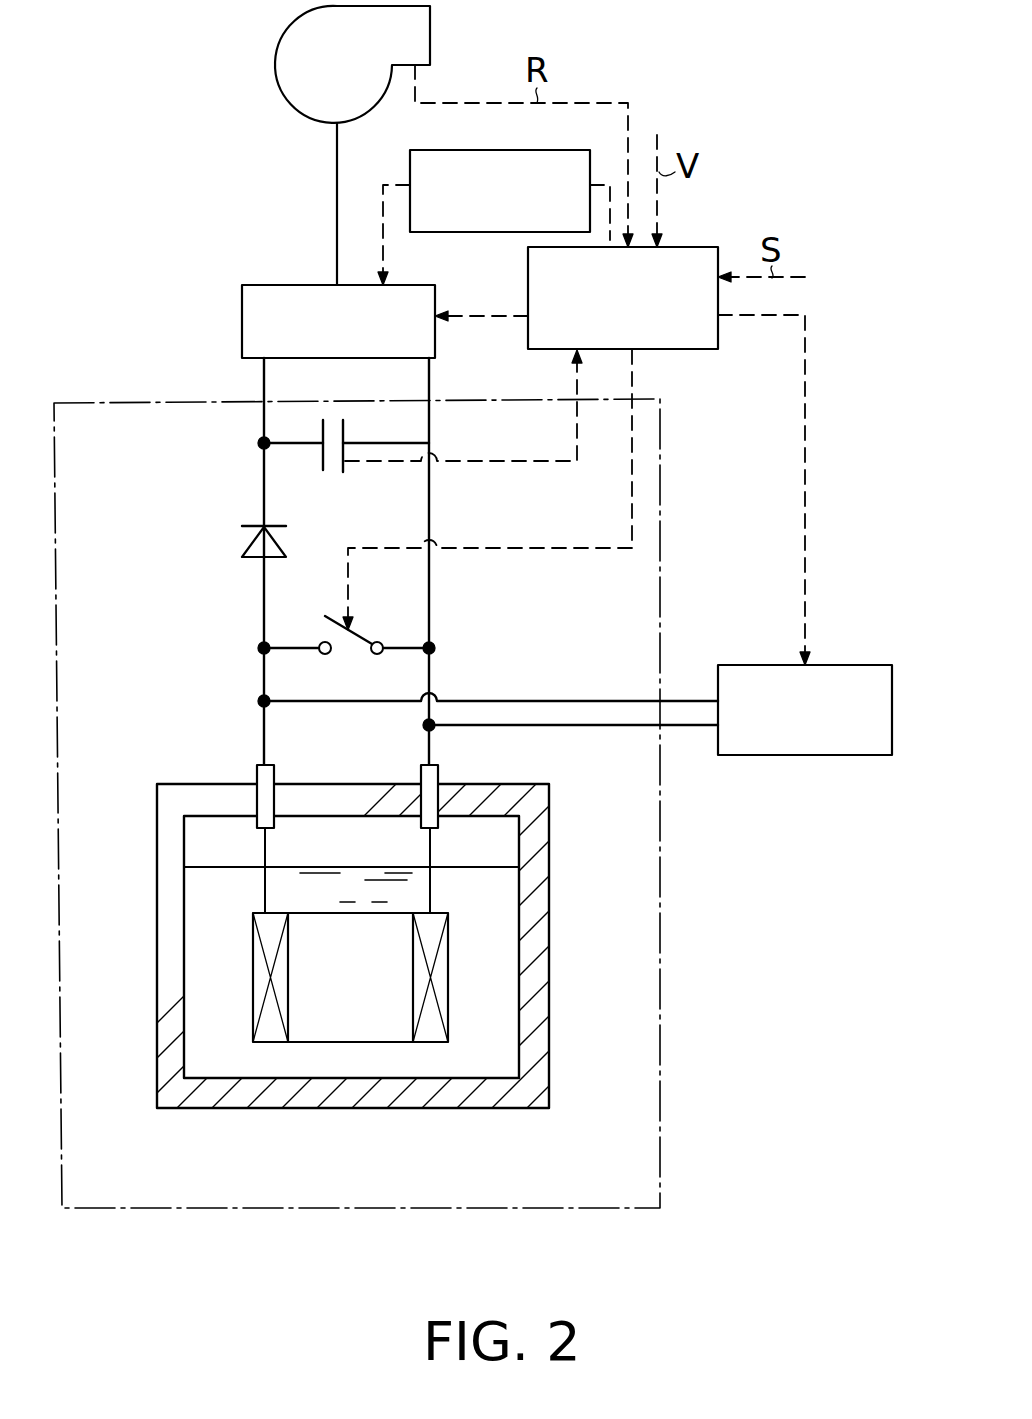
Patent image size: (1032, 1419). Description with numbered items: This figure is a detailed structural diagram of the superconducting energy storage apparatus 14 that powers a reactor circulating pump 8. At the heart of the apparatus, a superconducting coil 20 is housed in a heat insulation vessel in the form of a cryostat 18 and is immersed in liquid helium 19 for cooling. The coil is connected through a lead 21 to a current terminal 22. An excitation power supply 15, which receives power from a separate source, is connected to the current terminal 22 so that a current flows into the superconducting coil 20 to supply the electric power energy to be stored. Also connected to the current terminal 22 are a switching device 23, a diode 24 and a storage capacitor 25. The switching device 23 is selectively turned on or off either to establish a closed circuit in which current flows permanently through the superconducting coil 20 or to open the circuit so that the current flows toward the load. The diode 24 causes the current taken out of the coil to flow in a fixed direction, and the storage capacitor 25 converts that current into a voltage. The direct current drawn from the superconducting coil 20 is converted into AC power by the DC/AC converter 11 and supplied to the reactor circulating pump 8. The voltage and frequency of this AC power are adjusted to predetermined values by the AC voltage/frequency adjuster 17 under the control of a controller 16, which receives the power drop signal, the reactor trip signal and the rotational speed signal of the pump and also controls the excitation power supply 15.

The reactor circulating pump 8 is at (285, 96).
The DC/AC converter 11 is at (242, 307).
The superconducting energy storage apparatus 14 is at (90, 403).
The excitation power supply 15 is at (876, 665).
The controller 16 is at (718, 338).
The AC voltage/frequency adjuster 17 is at (410, 162).
The cryostat 18 is at (341, 1107).
The liquid helium 19 is at (497, 936).
The superconducting coil 20 is at (253, 1009).
The lead 21 is at (265, 849).
The current terminal 22 is at (257, 770).
The switching device 23 is at (365, 640).
The diode 24 is at (258, 556).
The storage capacitor 25 is at (326, 470).